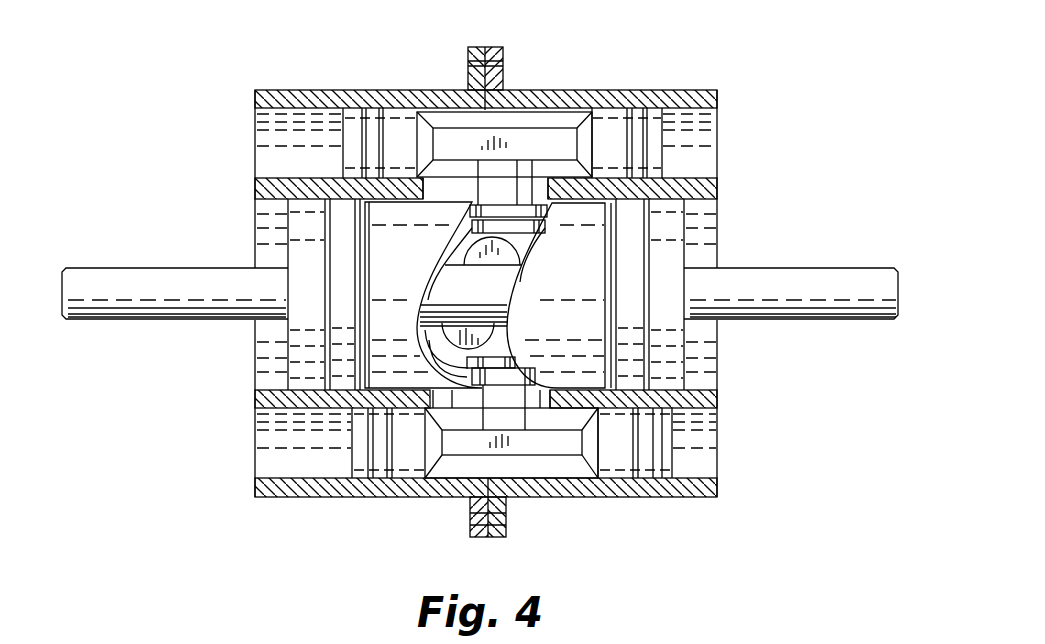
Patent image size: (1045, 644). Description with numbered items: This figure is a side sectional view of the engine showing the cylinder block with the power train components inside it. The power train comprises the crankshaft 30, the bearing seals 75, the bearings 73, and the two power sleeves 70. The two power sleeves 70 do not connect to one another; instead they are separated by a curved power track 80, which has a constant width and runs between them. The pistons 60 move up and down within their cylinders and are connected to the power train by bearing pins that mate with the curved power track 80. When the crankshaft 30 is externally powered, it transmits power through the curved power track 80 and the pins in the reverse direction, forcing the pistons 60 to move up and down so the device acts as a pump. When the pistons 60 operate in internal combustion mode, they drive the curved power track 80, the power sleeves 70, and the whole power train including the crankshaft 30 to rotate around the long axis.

The piston 60 is at (343, 90).
The crankshaft 30 is at (95, 278).
The power sleeve 70 is at (411, 287).
The bearing 73 is at (335, 330).
The bearing seal 75 is at (302, 365).
The curved power track 80 is at (442, 350).